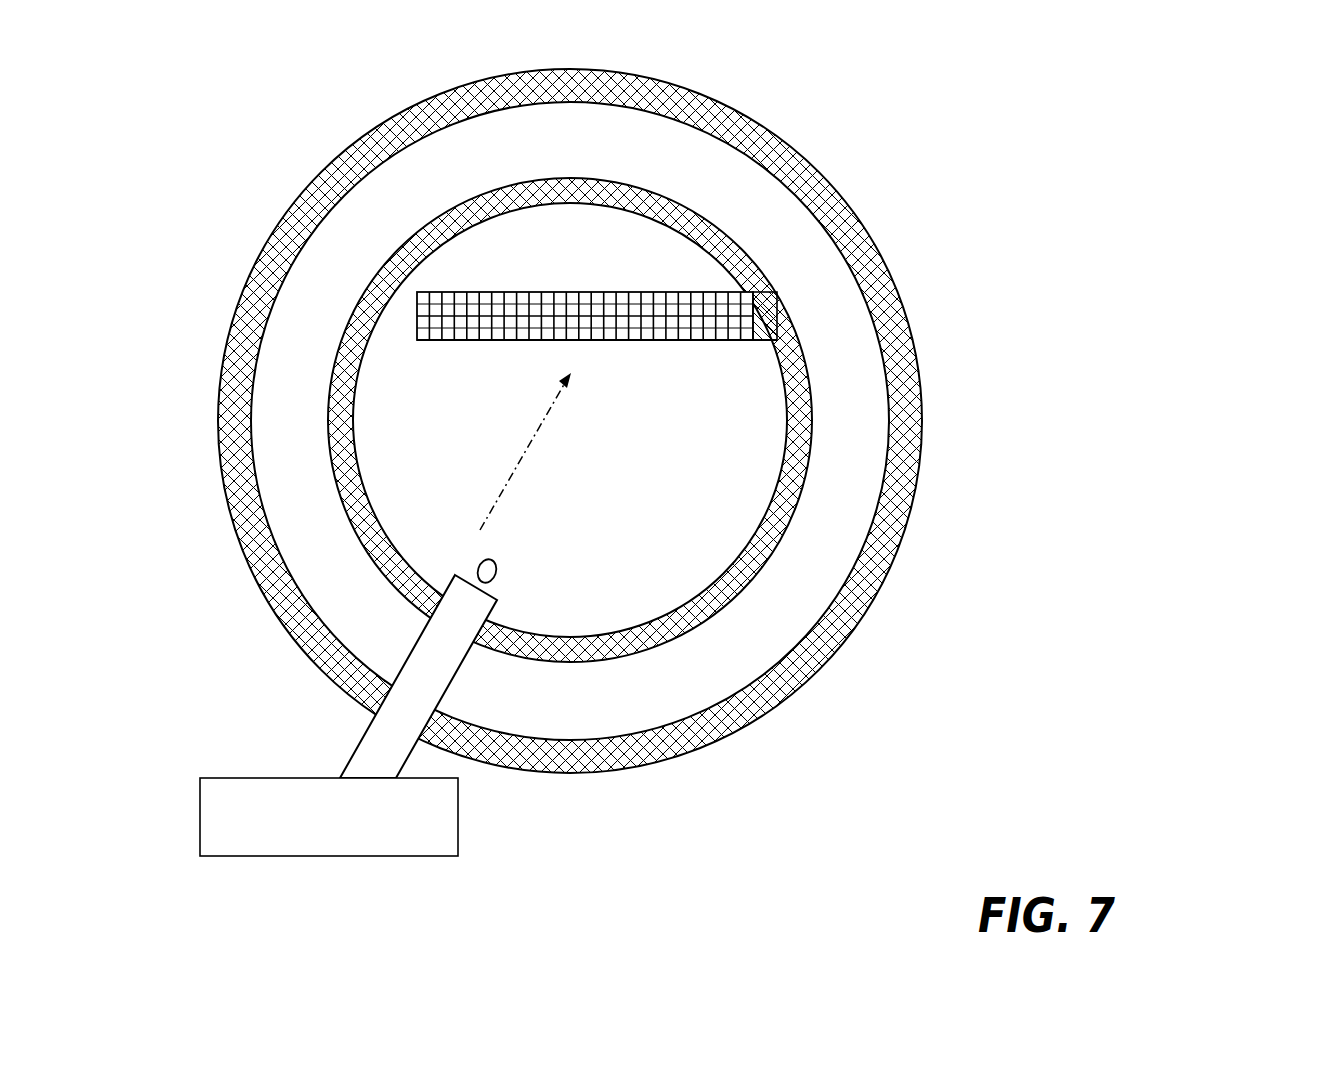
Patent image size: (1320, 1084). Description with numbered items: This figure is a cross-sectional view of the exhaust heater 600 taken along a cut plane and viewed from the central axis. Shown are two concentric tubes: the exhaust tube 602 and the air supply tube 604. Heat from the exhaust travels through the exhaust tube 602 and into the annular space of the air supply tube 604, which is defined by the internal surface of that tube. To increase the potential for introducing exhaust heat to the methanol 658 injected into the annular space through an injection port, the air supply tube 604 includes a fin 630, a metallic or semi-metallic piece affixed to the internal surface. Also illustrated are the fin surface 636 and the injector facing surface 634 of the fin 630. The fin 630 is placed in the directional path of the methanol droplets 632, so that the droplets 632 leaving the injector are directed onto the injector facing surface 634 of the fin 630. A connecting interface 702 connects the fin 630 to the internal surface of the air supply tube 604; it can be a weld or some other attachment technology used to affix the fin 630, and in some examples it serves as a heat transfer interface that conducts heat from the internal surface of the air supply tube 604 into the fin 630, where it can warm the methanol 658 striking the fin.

The exhaust heater 600 is at (1040, 94).
The exhaust tube 602 is at (917, 497).
The air supply tube 604 is at (353, 305).
The fin 630 is at (630, 317).
The methanol droplets 632 is at (514, 575).
The injector facing surface 634 is at (745, 340).
The fin surface 636 is at (693, 292).
The methanol 658 is at (348, 715).
The connecting interface 702 is at (765, 310).